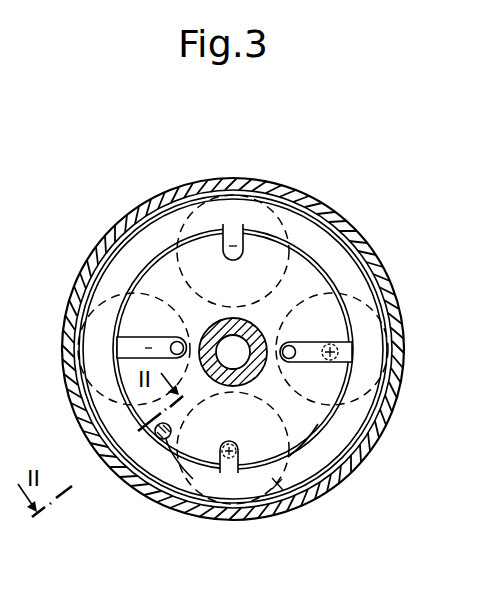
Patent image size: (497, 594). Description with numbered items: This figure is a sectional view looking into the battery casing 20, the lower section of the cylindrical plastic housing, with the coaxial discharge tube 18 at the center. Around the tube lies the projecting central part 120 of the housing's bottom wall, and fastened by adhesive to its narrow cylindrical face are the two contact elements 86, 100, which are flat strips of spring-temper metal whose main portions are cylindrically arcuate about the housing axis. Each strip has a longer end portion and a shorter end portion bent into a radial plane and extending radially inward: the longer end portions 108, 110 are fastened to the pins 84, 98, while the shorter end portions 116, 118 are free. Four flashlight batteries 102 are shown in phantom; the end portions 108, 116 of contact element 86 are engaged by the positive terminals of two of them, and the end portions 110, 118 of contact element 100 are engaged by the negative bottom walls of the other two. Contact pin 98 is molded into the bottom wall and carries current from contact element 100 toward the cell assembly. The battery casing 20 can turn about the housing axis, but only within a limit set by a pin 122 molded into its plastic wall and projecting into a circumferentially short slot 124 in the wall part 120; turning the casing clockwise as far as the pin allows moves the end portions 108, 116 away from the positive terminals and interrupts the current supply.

The discharge tube 18 is at (239, 322).
The battery casing 20 is at (352, 224).
The pin 84 is at (291, 360).
The contact element 86 is at (327, 428).
The contact pin 98 is at (175, 340).
The contact element 100 is at (152, 262).
The flashlight batteries 102 is at (197, 204).
The longer end portion 108 is at (310, 347).
The longer end portion 110 is at (118, 340).
The shorter end portion 116 is at (231, 473).
The shorter end portion 118 is at (235, 226).
The projecting central part 120 is at (318, 278).
The pin 122 is at (150, 465).
The slot 124 is at (156, 434).